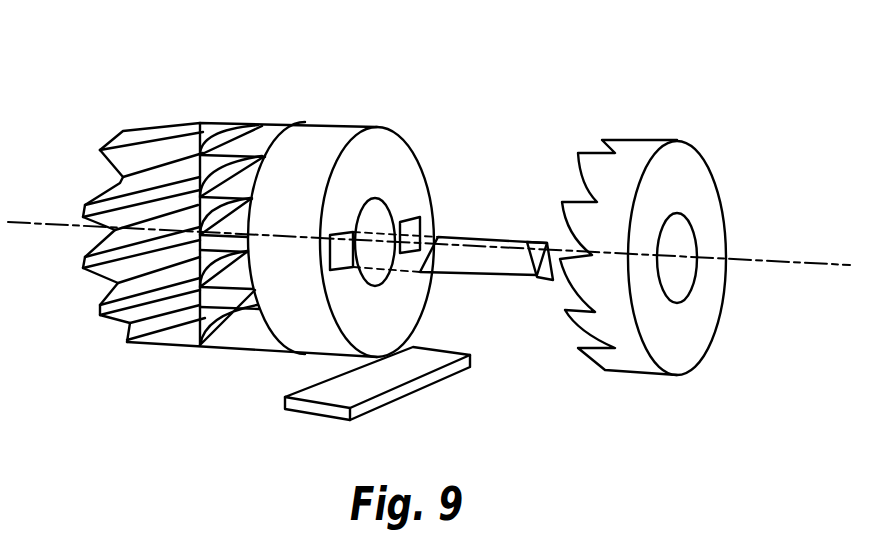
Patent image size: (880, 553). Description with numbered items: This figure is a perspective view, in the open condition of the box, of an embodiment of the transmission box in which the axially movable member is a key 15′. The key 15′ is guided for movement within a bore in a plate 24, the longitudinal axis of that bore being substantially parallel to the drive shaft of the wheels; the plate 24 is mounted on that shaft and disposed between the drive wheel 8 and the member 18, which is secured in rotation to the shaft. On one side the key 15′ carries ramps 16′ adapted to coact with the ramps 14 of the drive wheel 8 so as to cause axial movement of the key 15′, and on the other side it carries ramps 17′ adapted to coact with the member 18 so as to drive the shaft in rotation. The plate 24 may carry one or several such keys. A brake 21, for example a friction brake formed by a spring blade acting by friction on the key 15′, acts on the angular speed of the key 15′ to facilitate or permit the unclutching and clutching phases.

The drive wheel 8 is at (140, 155).
The ramps of the drive wheel 14 is at (245, 143).
The plate 24 is at (312, 155).
The key 15′ is at (476, 240).
The ramps 16′ is at (420, 253).
The ramps 17′ is at (553, 280).
The member secured in rotation to the shaft 18 is at (632, 160).
The brake 21 is at (337, 389).